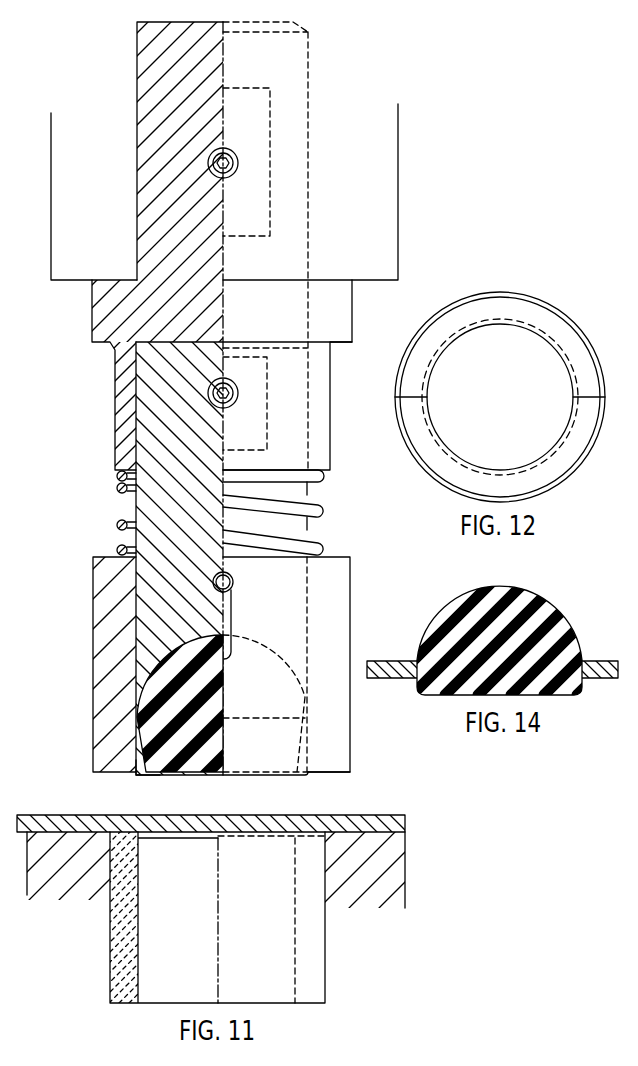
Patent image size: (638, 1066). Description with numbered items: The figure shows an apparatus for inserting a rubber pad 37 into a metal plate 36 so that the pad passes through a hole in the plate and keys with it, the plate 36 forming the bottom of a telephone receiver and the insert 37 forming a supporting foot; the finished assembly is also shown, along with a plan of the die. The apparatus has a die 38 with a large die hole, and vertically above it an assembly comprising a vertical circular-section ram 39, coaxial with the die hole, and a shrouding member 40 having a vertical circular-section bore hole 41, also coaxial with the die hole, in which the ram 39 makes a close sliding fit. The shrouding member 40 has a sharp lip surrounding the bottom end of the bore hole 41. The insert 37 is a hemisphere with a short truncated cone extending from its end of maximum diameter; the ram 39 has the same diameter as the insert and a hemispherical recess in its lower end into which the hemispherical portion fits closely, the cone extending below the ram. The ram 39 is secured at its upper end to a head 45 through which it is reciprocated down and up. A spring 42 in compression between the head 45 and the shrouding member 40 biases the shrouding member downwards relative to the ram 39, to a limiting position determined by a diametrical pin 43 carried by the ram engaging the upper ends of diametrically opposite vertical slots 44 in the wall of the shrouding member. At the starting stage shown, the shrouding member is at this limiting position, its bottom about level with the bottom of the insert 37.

In FIG. 11, the metal plate 36 is at (352, 823).
In FIG. 14, the metal plate 36 is at (392, 678).
In FIG. 11, the rubber pad 37 is at (147, 695).
In FIG. 14, the rubber pad 37 is at (460, 605).
In FIG. 11, the die 38 is at (112, 927).
In FIG. 12, the die 38 is at (465, 313).
In FIG. 11, the ram 39 is at (140, 575).
In FIG. 11, the shrouding member 40 is at (103, 632).
In FIG. 11, the bore hole 41 is at (137, 767).
In FIG. 11, the spring 42 is at (323, 510).
In FIG. 11, the diametrical pin 43 is at (233, 582).
In FIG. 11, the vertical slots 44 is at (226, 610).
In FIG. 11, the head 45 is at (101, 312).